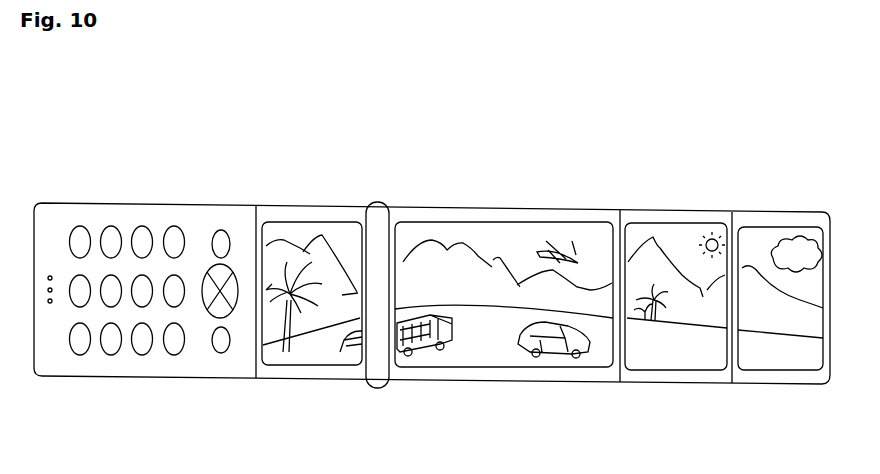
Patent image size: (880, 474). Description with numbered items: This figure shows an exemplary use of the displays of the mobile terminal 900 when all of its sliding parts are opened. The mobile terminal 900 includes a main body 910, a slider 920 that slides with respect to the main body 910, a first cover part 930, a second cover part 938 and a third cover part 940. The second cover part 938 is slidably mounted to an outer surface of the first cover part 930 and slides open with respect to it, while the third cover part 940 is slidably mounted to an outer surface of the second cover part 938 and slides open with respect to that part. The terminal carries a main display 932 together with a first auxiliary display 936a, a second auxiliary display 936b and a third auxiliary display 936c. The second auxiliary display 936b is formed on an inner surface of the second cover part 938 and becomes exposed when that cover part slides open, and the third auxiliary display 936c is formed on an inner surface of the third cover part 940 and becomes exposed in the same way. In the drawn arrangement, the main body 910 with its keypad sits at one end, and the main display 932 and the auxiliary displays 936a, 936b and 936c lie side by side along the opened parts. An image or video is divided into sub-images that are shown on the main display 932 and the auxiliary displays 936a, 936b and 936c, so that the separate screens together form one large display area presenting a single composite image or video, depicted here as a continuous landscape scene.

The mobile terminal 900 is at (540, 112).
The main body 910 is at (148, 203).
The slider 920 is at (305, 378).
The first cover part 930 is at (490, 381).
The second cover part 938 is at (670, 384).
The third cover part 940 is at (775, 385).
The main display 932 is at (502, 222).
The first auxiliary display 936a is at (311, 222).
The second auxiliary display 936b is at (677, 223).
The third auxiliary display 936c is at (782, 227).